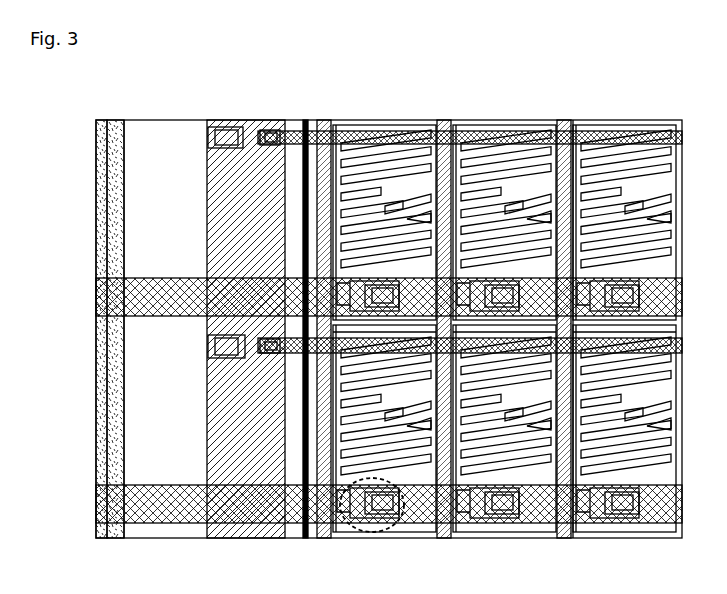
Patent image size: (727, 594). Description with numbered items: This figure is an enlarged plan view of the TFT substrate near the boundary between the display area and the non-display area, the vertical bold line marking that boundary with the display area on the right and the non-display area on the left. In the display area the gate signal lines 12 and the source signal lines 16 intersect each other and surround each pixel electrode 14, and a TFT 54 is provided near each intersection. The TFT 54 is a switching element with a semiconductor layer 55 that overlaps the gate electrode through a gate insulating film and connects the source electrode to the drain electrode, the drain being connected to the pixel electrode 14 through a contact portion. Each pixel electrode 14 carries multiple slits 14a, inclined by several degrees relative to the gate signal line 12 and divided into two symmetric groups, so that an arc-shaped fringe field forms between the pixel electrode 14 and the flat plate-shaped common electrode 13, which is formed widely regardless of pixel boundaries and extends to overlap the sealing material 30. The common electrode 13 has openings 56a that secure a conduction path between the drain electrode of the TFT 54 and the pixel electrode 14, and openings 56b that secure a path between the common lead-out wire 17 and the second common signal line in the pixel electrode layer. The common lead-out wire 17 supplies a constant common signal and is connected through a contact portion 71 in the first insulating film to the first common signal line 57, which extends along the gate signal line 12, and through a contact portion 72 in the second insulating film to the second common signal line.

The gate signal line 12 is at (128, 298).
The common electrode 13 is at (158, 130).
The pixel electrode 14 is at (342, 125).
The slit 14a is at (374, 158).
The source signal line 16 is at (326, 533).
The common lead-out wire 17 is at (246, 531).
The sealing material 30 is at (96, 196).
The TFT 54 is at (380, 533).
The semiconductor layer 55 is at (360, 288).
The opening 56a is at (424, 288).
The opening 56b is at (212, 358).
The first common signal line 57 is at (584, 128).
The contact portion 71 is at (268, 130).
The contact portion 72 is at (224, 128).